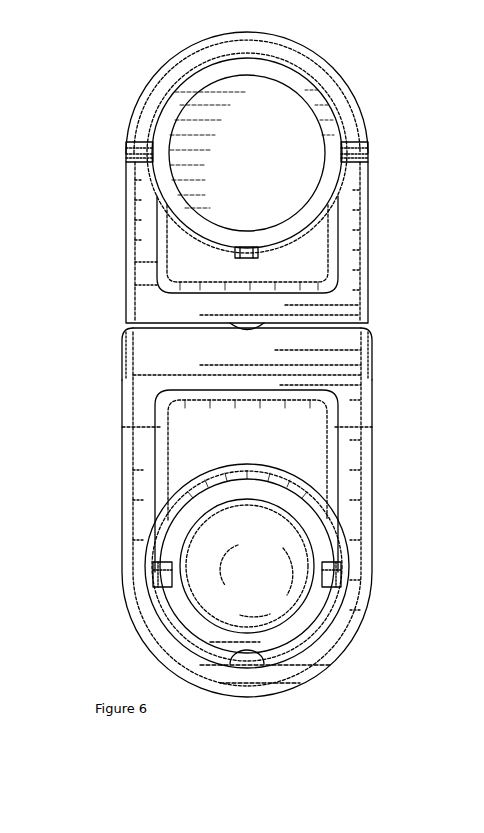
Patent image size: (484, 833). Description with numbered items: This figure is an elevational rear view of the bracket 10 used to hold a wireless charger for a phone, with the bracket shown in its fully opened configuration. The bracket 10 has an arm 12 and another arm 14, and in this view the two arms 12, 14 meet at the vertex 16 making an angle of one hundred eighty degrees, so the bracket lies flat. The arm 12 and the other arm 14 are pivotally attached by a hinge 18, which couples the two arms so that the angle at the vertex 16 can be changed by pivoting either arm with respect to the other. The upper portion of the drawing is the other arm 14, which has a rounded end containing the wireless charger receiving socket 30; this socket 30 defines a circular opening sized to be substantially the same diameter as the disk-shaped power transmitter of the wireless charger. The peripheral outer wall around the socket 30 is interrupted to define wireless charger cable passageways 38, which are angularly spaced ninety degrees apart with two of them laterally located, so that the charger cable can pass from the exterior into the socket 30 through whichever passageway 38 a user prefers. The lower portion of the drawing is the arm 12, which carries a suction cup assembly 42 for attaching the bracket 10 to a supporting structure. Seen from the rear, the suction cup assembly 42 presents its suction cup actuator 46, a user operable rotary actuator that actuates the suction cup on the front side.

The bracket 10 is at (97, 77).
The arm 12 is at (368, 565).
The other arm 14 is at (370, 197).
The vertex 16 is at (388, 320).
The hinge 18 is at (233, 325).
The wireless charger receiving socket 30 is at (247, 155).
The wireless charger cable passageway 38 is at (109, 168).
The suction cup assembly 42 is at (293, 595).
The suction cup actuator 46 is at (172, 630).